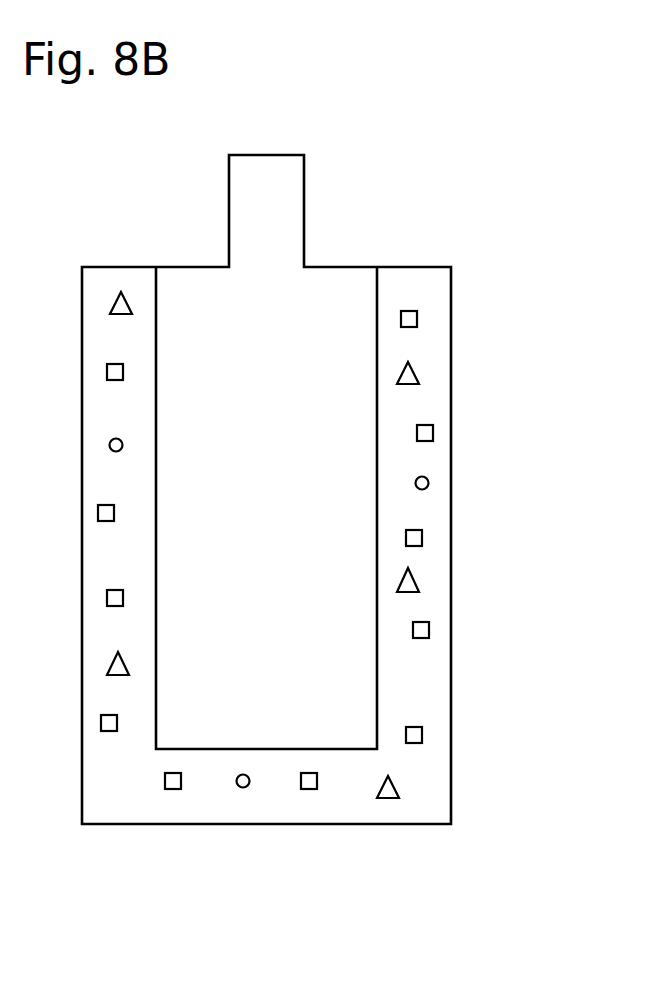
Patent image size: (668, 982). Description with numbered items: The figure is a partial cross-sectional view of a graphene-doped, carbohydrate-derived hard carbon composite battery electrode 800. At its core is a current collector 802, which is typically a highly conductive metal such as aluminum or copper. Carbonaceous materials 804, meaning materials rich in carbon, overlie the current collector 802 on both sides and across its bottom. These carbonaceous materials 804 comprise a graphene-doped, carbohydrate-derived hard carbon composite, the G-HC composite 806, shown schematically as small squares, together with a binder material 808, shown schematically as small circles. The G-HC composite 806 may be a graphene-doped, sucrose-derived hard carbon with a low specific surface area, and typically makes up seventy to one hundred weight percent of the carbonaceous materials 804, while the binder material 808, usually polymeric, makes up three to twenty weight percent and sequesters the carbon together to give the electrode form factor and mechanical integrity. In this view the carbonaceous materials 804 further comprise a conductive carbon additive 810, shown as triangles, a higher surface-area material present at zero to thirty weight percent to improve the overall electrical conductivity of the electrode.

The battery electrode 800 is at (114, 206).
The current collector 802 is at (246, 492).
The carbonaceous materials 804 is at (498, 286).
The G-HC composite 806 is at (423, 537).
The binder material 808 is at (244, 788).
The conductive carbon additive 810 is at (417, 587).